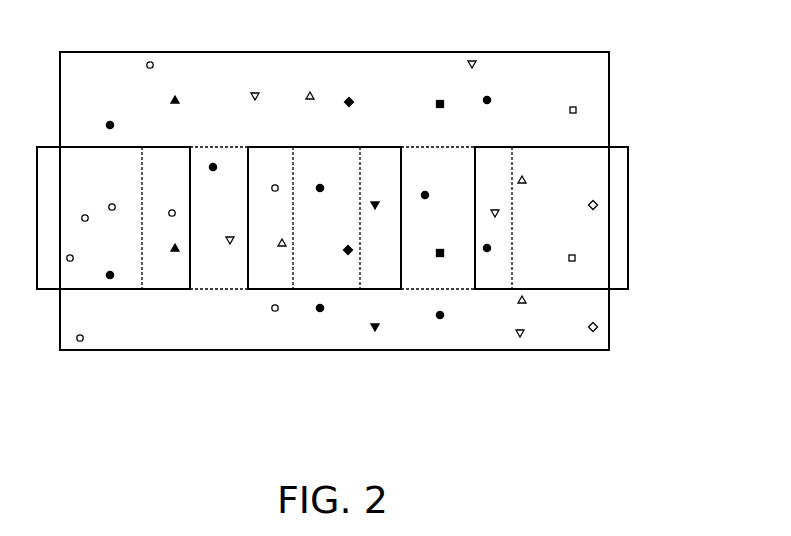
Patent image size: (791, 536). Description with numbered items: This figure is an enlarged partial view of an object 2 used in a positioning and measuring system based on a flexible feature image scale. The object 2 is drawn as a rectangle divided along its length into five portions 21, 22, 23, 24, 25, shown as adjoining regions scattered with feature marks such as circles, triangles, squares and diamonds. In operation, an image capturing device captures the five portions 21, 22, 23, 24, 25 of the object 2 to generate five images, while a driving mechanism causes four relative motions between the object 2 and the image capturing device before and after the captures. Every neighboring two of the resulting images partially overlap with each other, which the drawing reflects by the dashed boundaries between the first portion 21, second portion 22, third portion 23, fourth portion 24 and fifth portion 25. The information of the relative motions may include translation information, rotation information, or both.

The object 2 is at (573, 68).
The first portion 21 is at (100, 147).
The second portion 22 is at (211, 289).
The third portion 23 is at (325, 147).
The fourth portion 24 is at (458, 290).
The fifth portion 25 is at (543, 147).